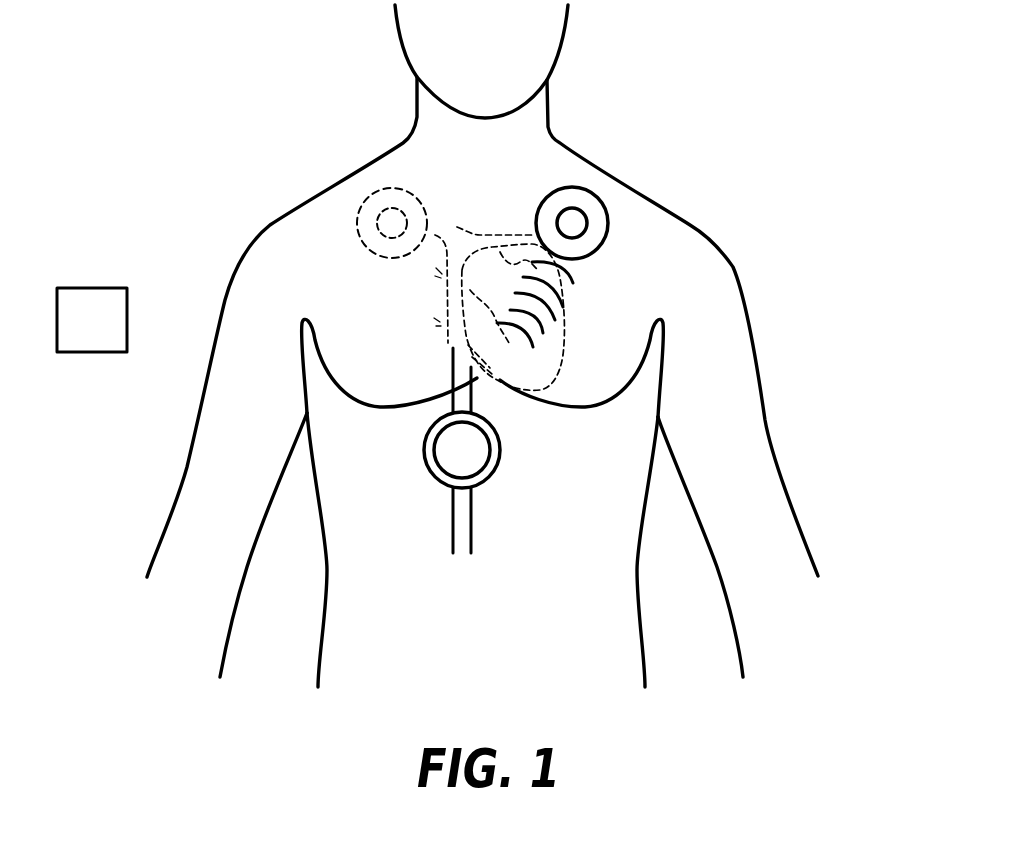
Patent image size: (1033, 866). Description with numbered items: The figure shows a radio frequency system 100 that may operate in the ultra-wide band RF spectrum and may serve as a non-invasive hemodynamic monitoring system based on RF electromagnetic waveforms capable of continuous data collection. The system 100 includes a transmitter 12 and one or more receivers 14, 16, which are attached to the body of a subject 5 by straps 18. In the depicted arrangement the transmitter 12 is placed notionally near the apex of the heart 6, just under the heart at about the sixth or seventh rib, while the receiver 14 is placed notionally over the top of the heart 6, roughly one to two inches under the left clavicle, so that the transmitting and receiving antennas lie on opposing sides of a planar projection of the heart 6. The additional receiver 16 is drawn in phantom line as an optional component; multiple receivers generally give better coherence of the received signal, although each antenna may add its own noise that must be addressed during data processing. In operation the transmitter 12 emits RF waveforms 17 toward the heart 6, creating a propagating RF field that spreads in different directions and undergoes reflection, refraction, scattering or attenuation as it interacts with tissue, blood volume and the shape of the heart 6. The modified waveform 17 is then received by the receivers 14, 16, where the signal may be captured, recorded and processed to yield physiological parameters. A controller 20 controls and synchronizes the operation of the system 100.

The radio frequency system 100 is at (232, 138).
The subject 5 is at (581, 48).
The heart 6 is at (508, 221).
The transmitter 12 is at (426, 463).
The receiver 14 is at (603, 207).
The receiver 16 is at (360, 207).
The RF waveforms 17 is at (586, 268).
The straps 18 is at (494, 521).
The controller 20 is at (92, 288).